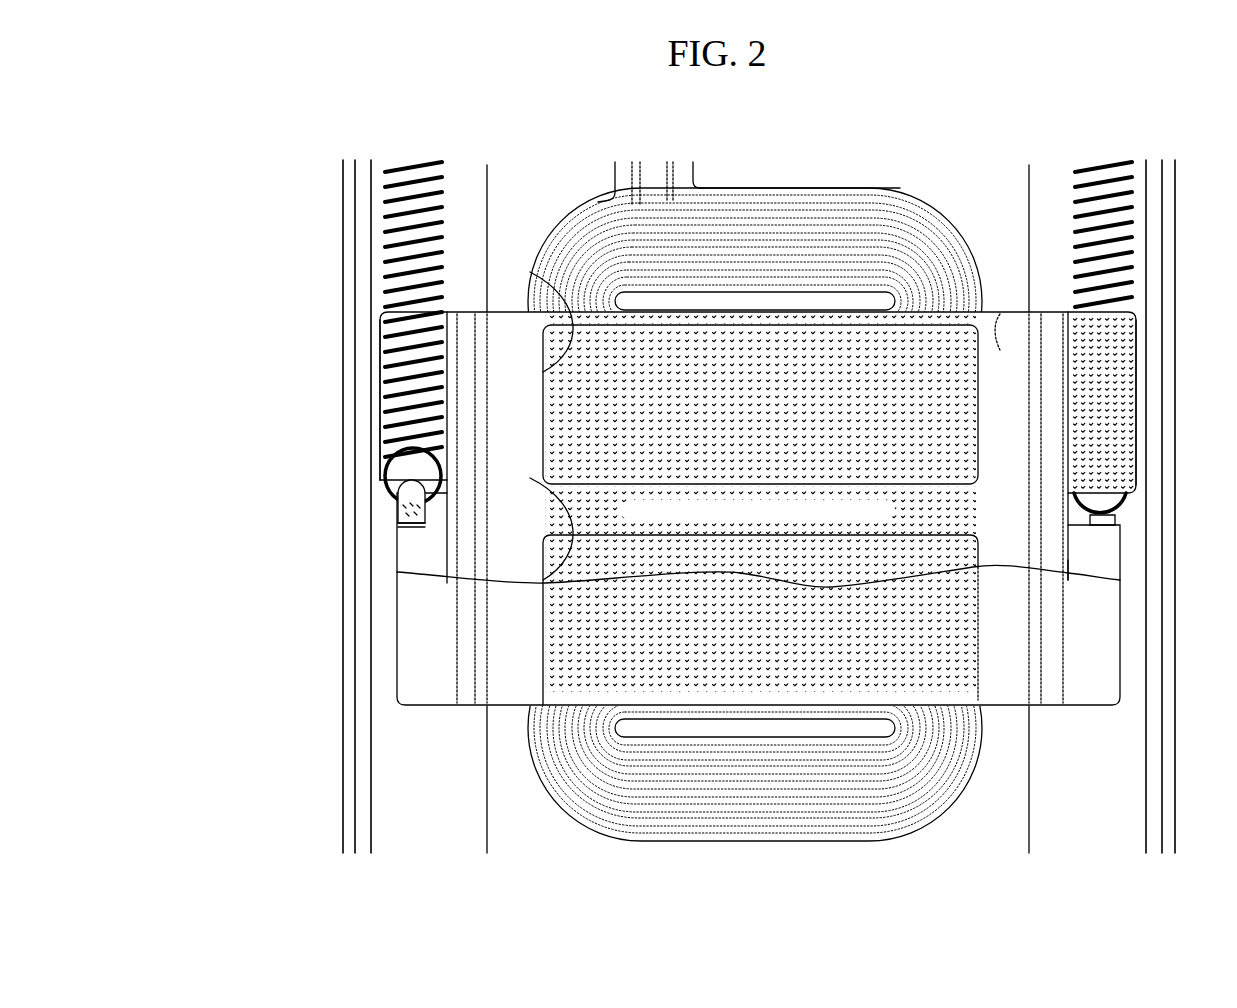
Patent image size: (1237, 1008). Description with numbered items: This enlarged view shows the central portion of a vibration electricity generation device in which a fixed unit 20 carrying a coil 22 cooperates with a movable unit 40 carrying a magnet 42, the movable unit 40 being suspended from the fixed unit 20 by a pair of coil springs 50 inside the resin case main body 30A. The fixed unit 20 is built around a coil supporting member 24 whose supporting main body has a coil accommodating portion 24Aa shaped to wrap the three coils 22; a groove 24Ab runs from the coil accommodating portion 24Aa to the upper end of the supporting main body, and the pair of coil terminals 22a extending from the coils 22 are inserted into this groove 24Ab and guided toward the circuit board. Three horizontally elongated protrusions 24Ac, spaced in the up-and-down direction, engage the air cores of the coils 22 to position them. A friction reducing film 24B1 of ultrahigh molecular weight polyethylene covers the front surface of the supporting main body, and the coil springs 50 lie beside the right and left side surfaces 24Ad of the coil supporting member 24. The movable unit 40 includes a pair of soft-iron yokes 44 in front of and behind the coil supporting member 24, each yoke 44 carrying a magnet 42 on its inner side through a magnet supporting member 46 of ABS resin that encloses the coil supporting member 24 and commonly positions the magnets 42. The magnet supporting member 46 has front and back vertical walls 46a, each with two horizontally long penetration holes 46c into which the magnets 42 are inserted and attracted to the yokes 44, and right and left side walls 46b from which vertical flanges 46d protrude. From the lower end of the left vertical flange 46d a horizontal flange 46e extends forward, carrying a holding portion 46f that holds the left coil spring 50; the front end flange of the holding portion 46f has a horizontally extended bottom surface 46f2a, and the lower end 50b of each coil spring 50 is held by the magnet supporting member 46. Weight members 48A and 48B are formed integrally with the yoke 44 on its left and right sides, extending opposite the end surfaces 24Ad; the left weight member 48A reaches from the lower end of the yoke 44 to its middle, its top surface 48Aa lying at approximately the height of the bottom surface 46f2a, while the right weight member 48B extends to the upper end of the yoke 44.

The fixed unit 20 is at (325, 205).
The coil 22 is at (775, 215).
The coil terminal 22a is at (672, 170).
The coil supporting member 24 is at (487, 808).
The coil accommodating portion 24Aa is at (590, 800).
The groove 24Ab is at (620, 172).
The protrusion 24Ac is at (845, 735).
The side surface 24Ad is at (487, 738).
The friction reducing film 24B1 is at (505, 238).
The case main body 30A is at (343, 760).
The movable unit 40 is at (380, 600).
The magnet 42 is at (830, 320).
The yoke 44 is at (1000, 710).
The magnet supporting member 46 is at (660, 310).
The vertical wall 46a is at (995, 345).
The side wall 46b is at (1075, 360).
The penetration hole 46c is at (565, 350).
The vertical flange 46d is at (385, 385).
The horizontal flange 46e is at (400, 487).
The holding portion 46f is at (405, 520).
The bottom surface 46f2a is at (410, 527).
The weight member 48A is at (415, 630).
The top surface 48Aa is at (465, 470).
The weight member 48B is at (430, 553).
The coil spring 50 is at (385, 272).
The lower end 50b is at (380, 465).